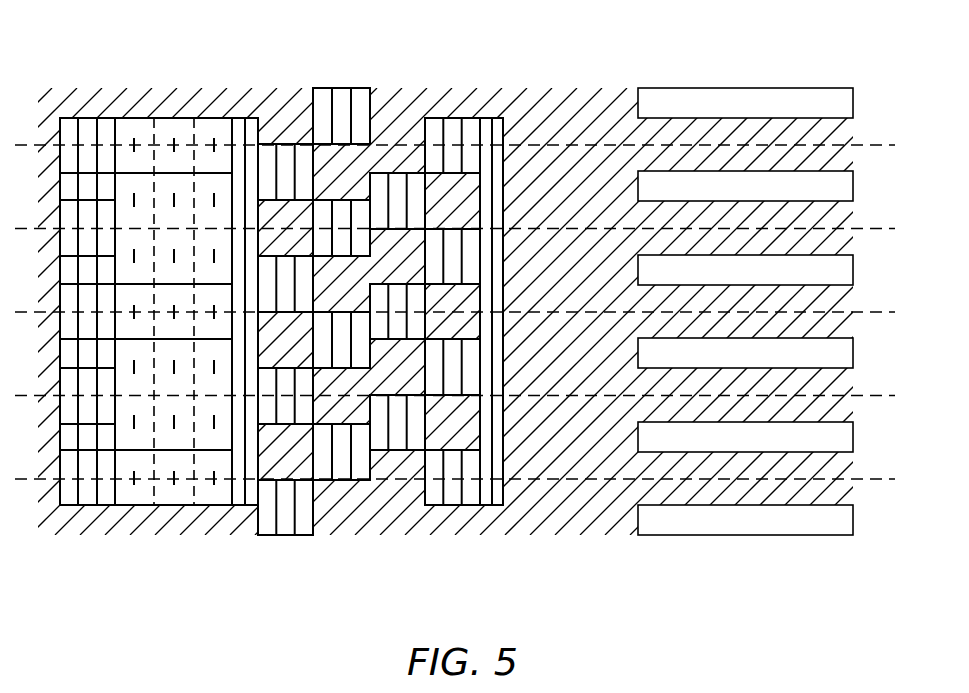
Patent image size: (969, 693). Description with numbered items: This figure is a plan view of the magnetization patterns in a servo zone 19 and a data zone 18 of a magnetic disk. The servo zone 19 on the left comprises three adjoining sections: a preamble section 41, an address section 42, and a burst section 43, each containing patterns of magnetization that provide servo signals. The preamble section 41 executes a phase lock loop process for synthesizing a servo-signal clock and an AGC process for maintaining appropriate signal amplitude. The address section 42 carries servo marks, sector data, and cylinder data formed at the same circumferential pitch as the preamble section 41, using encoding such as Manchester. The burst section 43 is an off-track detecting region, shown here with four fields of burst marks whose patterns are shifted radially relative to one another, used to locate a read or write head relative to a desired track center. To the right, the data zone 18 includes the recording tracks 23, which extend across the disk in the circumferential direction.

The servo zone 19 is at (348, 322).
The data zone 18 is at (638, 74).
The recording tracks 23 is at (860, 147).
The preamble section 41 is at (60, 535).
The address section 42 is at (232, 535).
The burst section 43 is at (258, 535).